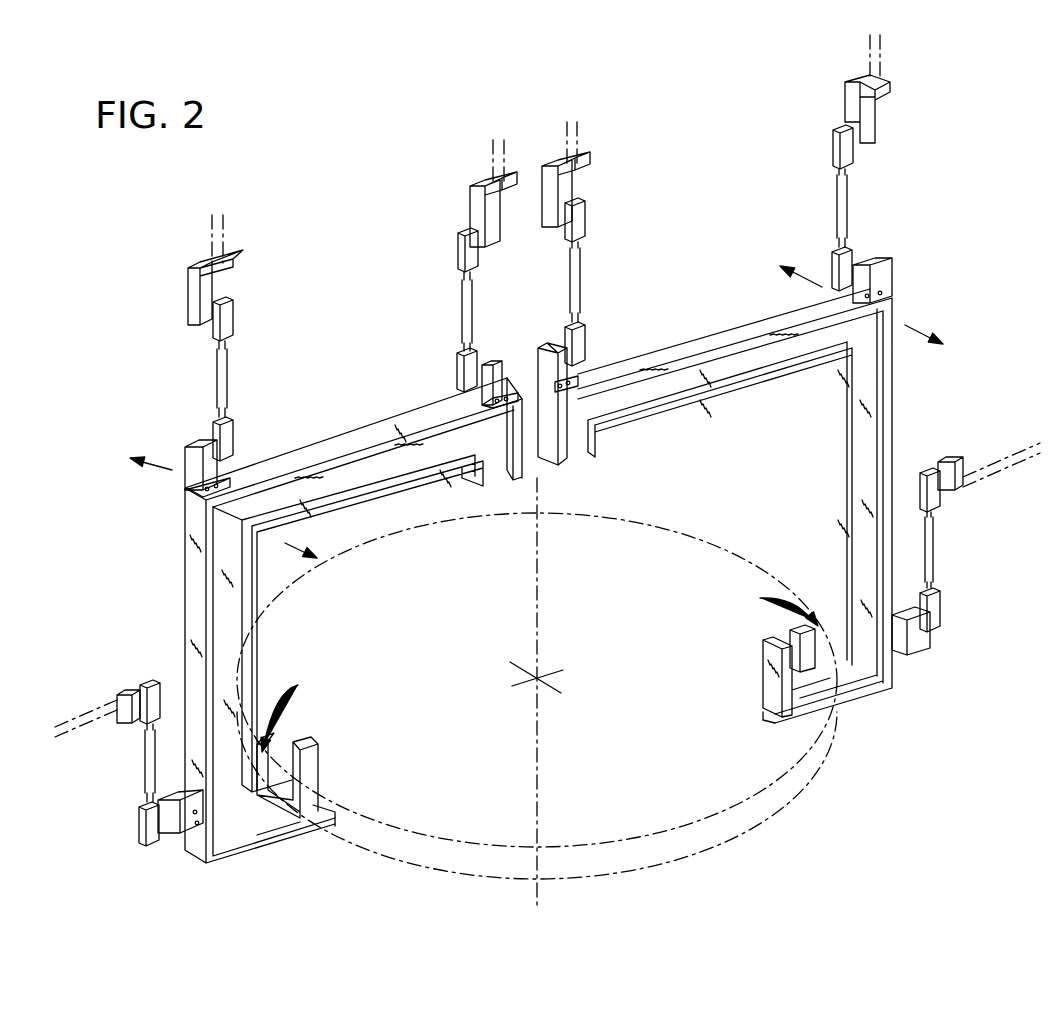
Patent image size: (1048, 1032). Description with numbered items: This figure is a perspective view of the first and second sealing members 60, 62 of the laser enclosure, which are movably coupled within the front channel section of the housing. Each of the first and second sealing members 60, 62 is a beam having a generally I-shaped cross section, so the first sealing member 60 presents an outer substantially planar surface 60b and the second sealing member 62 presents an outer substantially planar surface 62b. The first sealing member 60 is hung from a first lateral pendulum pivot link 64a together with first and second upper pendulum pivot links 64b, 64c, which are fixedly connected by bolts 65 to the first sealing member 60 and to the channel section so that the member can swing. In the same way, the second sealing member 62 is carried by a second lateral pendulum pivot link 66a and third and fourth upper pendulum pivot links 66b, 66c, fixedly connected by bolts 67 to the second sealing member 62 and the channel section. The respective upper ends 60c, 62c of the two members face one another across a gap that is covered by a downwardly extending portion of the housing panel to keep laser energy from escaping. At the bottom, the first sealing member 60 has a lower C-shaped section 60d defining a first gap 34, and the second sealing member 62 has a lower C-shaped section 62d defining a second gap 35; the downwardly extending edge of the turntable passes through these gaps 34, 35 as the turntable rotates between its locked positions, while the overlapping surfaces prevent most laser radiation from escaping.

The first gap 34 is at (293, 738).
The second gap 35 is at (779, 650).
The first sealing member 60 is at (343, 448).
The outer substantially planar surface 60b is at (357, 478).
The upper end 60c is at (493, 480).
The lower C-shaped section 60d is at (275, 813).
The second sealing member 62 is at (655, 360).
The outer substantially planar surface 62b is at (725, 375).
The upper end 62c is at (572, 447).
The lower C-shaped section 62d is at (818, 673).
The first lateral pendulum pivot link 64a is at (147, 755).
The first upper pendulum pivot link 64b is at (224, 380).
The second upper pendulum pivot link 64c is at (465, 303).
The bolts 65 is at (217, 287).
The second lateral pendulum pivot link 66a is at (933, 545).
The third upper pendulum pivot link 66b is at (848, 207).
The fourth upper pendulum pivot link 66c is at (580, 287).
The bolts 67 is at (878, 110).